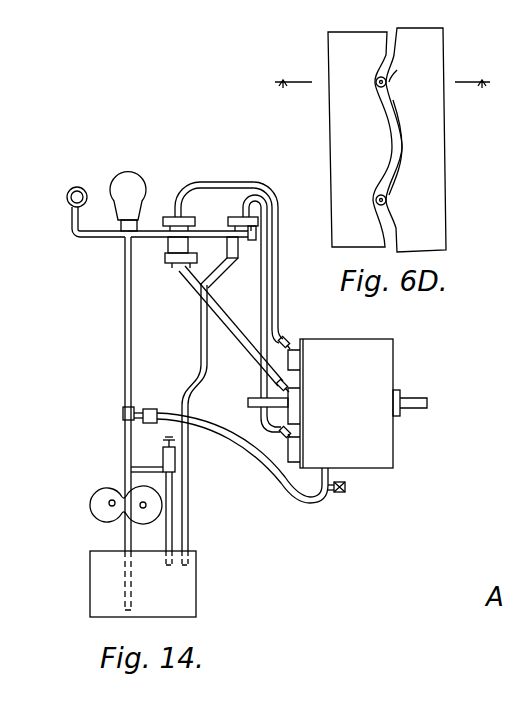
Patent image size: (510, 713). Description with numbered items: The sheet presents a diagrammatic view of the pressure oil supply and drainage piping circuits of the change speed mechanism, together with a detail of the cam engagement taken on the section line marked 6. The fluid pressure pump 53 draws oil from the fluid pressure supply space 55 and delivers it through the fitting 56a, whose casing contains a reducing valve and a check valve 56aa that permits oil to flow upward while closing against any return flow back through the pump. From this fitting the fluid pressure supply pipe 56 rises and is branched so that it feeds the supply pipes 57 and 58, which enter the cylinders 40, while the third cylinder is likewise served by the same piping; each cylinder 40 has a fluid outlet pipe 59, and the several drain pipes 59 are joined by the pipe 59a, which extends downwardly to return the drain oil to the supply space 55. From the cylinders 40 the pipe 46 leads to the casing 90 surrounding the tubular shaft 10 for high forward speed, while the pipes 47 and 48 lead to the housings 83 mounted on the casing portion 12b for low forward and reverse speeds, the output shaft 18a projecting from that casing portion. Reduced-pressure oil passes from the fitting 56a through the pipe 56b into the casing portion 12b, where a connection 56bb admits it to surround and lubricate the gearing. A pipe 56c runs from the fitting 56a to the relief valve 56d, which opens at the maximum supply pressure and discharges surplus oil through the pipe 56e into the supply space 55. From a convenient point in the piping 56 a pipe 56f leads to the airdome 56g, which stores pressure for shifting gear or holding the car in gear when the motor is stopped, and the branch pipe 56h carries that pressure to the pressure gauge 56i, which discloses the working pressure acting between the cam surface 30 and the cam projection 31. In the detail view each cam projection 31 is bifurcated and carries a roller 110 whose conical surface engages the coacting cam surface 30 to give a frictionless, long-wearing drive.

In FIG. 14, the pressure gauge 56i is at (66, 195).
In FIG. 14, the branch pipe 56h is at (98, 231).
In FIG. 14, the airdome 56g is at (128, 201).
In FIG. 14, the pipe 56f is at (124, 238).
In FIG. 14, the fluid pressure supply pipe 56 is at (148, 236).
In FIG. 14, the supply pipe 58 is at (257, 232).
In FIG. 14, the cylinder 40 is at (227, 220).
In FIG. 14, the supply pipe 57 is at (193, 233).
In FIG. 14, the fluid outlet pipe 59 is at (168, 246).
In FIG. 14, the pipe 47 is at (217, 186).
In FIG. 14, the pipe 48 is at (265, 274).
In FIG. 14, the fluid pressure supply pipe 46 is at (219, 326).
In FIG. 14, the pipe 59a is at (201, 333).
In FIG. 14, the check valve 56aa is at (123, 415).
In FIG. 14, the fitting 56a is at (150, 409).
In FIG. 14, the pipe 56b is at (253, 460).
In FIG. 14, the valve 56bb is at (338, 492).
In FIG. 14, the pipe 56c is at (145, 466).
In FIG. 14, the relief valve 56d is at (175, 456).
In FIG. 14, the pipe 56e is at (169, 512).
In FIG. 14, the fluid pressure pump 53 is at (126, 505).
In FIG. 14, the fluid pressure supply space 55 is at (143, 584).
In FIG. 14, the housing 83 is at (292, 359).
In FIG. 14, the casing 90 is at (297, 401).
In FIG. 14, the tubular shaft 10 is at (246, 402).
In FIG. 14, the casing portion 12b is at (345, 355).
In FIG. 14, the output shaft 18a is at (413, 408).
In FIG. 6D, the section line 6 is at (382, 97).
In FIG. 6D, the cam surface 30 is at (342, 123).
In FIG. 6D, the cam projection 31 is at (393, 70).
In FIG. 6D, the roller 110 is at (386, 85).